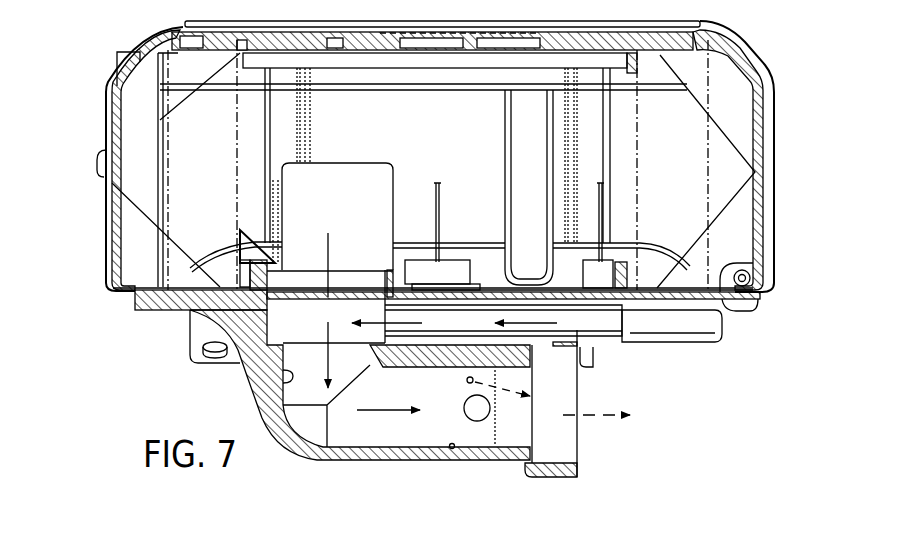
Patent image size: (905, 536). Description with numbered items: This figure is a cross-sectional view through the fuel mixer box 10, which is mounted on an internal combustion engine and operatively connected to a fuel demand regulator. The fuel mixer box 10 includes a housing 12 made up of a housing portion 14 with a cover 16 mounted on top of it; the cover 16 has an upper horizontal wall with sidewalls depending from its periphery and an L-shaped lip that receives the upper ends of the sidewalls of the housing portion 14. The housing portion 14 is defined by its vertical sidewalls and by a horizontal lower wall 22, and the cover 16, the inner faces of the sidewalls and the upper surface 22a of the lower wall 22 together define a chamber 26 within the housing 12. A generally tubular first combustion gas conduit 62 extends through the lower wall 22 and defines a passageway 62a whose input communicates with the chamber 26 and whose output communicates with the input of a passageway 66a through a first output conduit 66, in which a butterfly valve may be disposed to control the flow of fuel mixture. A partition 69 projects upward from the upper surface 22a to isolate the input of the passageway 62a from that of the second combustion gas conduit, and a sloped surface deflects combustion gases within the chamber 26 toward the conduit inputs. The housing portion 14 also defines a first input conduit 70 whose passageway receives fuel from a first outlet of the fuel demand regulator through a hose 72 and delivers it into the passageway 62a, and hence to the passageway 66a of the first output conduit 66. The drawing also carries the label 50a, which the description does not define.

The fuel mixer box 10 is at (750, 356).
The housing 12 is at (782, 148).
The housing portion 14 is at (100, 268).
The cover 16 is at (112, 100).
The horizontal lower wall 22 is at (722, 298).
The upper surface of lower wall 22a is at (755, 262).
The chamber 26 is at (459, 141).
The outlet duct 50a is at (500, 352).
The first combustion gas conduit 62 is at (390, 268).
The passageway of first combustion gas conduit 62a is at (280, 385).
The first output conduit 66 is at (358, 462).
The passageway of first output conduit 66a is at (452, 449).
The partition 69 is at (335, 170).
The first input conduit 70 is at (490, 288).
The hose 72 is at (678, 336).